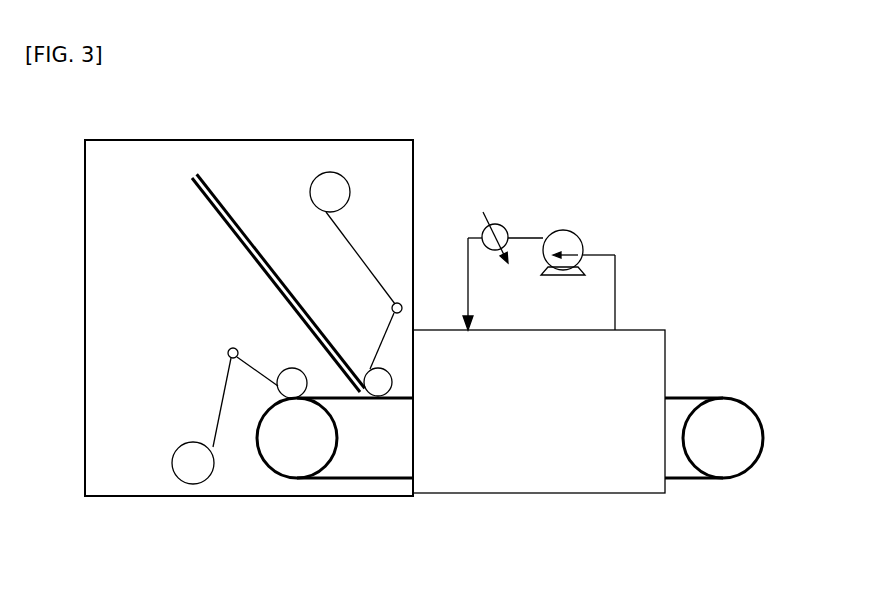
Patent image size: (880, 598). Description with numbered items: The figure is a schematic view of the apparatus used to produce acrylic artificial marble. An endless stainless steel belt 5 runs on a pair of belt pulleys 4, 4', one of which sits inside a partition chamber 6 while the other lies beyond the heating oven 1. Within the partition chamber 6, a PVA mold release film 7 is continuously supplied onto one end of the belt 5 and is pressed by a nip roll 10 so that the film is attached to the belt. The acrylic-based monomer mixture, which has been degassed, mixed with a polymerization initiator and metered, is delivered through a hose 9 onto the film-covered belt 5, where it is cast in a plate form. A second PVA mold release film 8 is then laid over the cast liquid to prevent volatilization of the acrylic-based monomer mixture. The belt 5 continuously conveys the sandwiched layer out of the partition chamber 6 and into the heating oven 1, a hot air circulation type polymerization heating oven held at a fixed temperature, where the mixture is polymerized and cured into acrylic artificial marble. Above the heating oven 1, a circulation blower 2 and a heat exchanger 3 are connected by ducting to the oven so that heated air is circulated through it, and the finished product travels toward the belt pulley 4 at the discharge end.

The heating oven 1 is at (687, 321).
The circulation blower 2 is at (594, 221).
The heat exchanger 3 is at (518, 208).
The belt pulley 4 is at (754, 415).
The belt pulley 4' is at (198, 523).
The endless stainless steel belt 5 is at (342, 492).
The partition chamber 6 is at (97, 180).
The PVA mold release film (for belt attachment) 7 is at (163, 431).
The PVA mold release film (for prevention of acrylic-based monomer mixture volatiliz 8 is at (371, 172).
The hose for feeding acrylic-based monomer mixture 9 is at (241, 185).
The nip roll 10 is at (262, 352).